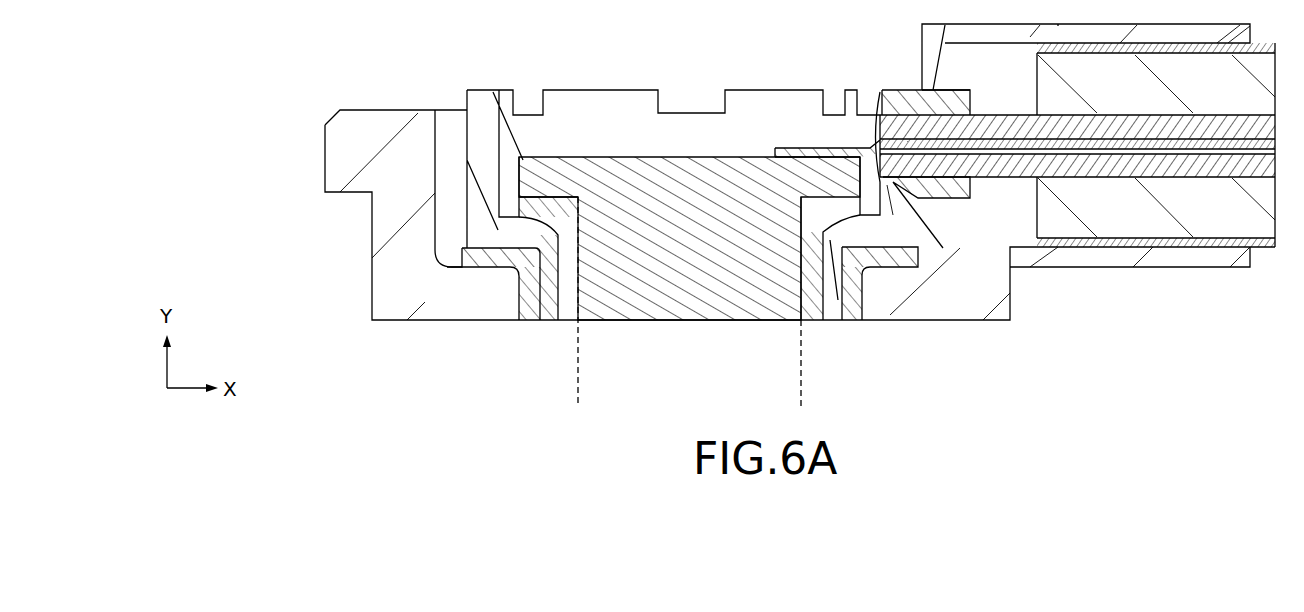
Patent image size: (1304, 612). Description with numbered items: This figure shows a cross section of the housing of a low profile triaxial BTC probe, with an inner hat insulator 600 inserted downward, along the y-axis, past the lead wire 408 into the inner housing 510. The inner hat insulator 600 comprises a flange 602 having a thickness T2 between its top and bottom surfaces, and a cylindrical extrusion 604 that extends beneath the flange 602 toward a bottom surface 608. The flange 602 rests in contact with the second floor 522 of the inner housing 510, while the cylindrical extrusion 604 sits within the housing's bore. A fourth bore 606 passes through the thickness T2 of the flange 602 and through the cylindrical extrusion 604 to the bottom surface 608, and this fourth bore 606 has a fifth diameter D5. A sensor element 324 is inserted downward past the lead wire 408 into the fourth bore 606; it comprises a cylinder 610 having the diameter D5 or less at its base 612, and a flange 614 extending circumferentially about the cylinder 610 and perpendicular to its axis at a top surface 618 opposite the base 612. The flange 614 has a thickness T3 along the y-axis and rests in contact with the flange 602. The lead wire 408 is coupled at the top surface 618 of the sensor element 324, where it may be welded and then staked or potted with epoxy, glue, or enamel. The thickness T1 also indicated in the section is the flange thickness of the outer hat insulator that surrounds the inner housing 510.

The inner housing 510 is at (780, 54).
The sensor element 324 is at (599, 135).
The flange 614 is at (520, 157).
The top surface 618 is at (623, 157).
The lead wire 408 is at (803, 153).
The inner hat insulator 600 is at (600, 212).
The cylinder 610 is at (686, 266).
The cylindrical extrusion 604 is at (808, 258).
The fourth bore 606 is at (796, 297).
The flange 602 is at (838, 205).
The second floor 522 is at (523, 220).
The bottom surface 608 is at (563, 322).
The base 612 is at (652, 322).
The thickness T1 is at (483, 267).
The thickness T2 is at (536, 217).
The thickness T3 is at (570, 197).
The fifth diameter D5 is at (801, 388).